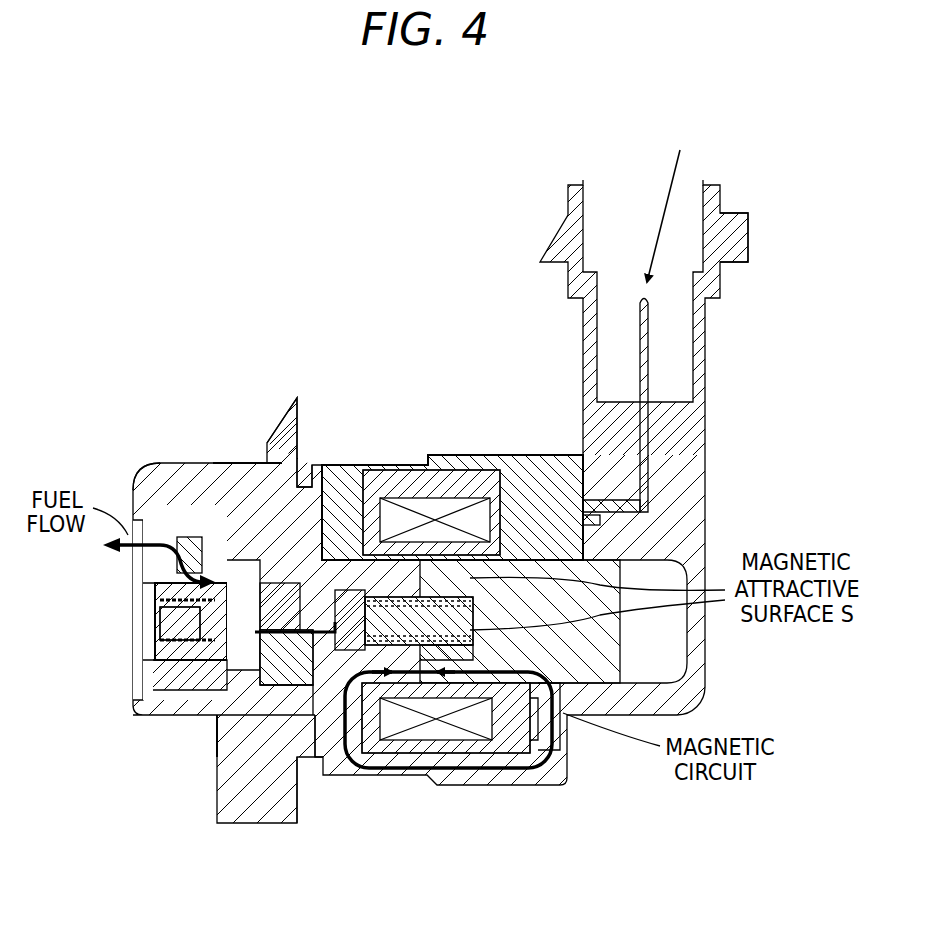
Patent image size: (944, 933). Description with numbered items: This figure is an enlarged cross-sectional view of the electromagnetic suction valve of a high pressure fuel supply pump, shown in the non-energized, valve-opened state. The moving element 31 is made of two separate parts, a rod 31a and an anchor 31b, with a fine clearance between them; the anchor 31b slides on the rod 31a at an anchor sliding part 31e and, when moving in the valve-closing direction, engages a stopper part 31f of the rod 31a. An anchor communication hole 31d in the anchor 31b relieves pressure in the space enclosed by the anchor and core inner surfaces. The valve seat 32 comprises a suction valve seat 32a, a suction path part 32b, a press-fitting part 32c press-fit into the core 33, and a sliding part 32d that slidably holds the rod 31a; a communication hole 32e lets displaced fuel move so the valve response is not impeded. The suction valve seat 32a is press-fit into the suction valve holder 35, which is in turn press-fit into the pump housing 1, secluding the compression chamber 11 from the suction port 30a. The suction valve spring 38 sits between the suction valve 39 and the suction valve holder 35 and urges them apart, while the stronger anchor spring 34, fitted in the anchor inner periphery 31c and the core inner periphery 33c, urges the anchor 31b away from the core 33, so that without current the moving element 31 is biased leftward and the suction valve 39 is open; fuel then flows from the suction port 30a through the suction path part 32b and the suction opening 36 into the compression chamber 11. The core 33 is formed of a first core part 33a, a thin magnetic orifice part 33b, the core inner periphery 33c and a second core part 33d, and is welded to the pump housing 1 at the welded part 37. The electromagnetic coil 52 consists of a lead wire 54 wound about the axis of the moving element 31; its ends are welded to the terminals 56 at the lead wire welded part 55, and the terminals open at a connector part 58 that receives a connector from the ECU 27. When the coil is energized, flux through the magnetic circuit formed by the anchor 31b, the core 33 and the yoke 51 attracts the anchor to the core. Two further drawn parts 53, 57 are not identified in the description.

The pump housing 1 is at (150, 495).
The compression chamber 11 is at (130, 655).
The ECU 27 is at (675, 188).
The suction port 30a is at (221, 525).
The moving element 31 is at (558, 343).
The rod 31a is at (330, 560).
The anchor 31b is at (350, 590).
The anchor inner periphery 31c is at (372, 600).
The anchor communication hole 31d is at (396, 600).
The anchor sliding part 31e is at (415, 620).
The stopper part 31f is at (437, 640).
The valve seat 32 is at (380, 876).
The suction valve seat 32a is at (175, 680).
The suction path part 32b is at (224, 665).
The press-fitting part 32c is at (285, 650).
The sliding part 32d is at (300, 660).
The communication hole 32e is at (317, 660).
The core 33 is at (398, 876).
The first core part 33a is at (350, 660).
The magnetic orifice part 33b is at (410, 655).
The core inner periphery 33c is at (433, 655).
The second core part 33d is at (520, 660).
The anchor spring 34 is at (505, 660).
The suction valve holder 35 is at (150, 655).
The suction opening 36 is at (165, 567).
The welded part 37 is at (303, 480).
The suction valve spring 38 is at (213, 530).
The suction valve 39 is at (232, 540).
The yoke 51 is at (470, 470).
The electromagnetic coil 52 is at (488, 496).
The yoke 53 is at (512, 468).
The lead wire 54 is at (548, 497).
The lead wire welded part 55 is at (598, 502).
The terminals 56 is at (645, 365).
The connector housing 57 is at (665, 467).
The connector part 58 is at (722, 232).